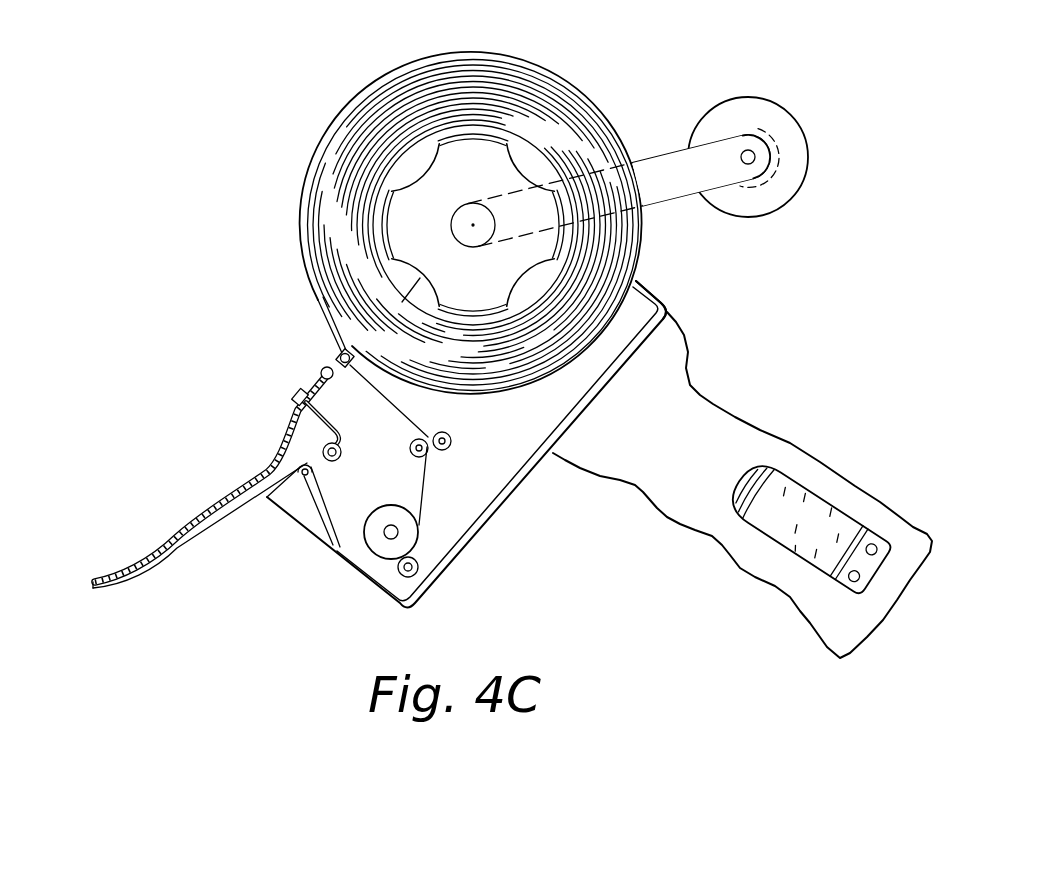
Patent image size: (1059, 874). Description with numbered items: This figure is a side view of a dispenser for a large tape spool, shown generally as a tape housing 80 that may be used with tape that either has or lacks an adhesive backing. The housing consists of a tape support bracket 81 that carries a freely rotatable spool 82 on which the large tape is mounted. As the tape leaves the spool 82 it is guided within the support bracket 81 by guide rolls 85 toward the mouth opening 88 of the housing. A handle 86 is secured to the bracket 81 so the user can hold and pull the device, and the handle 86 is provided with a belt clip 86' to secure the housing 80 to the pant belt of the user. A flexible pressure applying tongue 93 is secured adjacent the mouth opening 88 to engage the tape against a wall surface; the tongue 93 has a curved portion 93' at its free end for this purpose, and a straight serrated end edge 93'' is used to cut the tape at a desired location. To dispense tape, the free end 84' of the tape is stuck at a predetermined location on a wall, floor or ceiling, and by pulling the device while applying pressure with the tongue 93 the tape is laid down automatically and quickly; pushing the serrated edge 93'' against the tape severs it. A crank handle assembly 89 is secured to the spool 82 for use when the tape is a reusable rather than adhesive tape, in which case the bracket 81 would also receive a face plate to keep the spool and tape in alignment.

The tape housing 80 is at (565, 497).
The tape support bracket 81 is at (659, 284).
The spool 82 is at (485, 147).
The free end of the tape 84' is at (368, 358).
The guide rolls 85 is at (412, 533).
The handle 86 is at (742, 485).
The belt clip 86' is at (808, 489).
The mouth opening 88 is at (275, 430).
The crank handle assembly 89 is at (787, 100).
The flexible pressure applying tongue 93 is at (244, 491).
The curved portion 93' is at (200, 542).
The serrated end edge 93'' is at (112, 544).